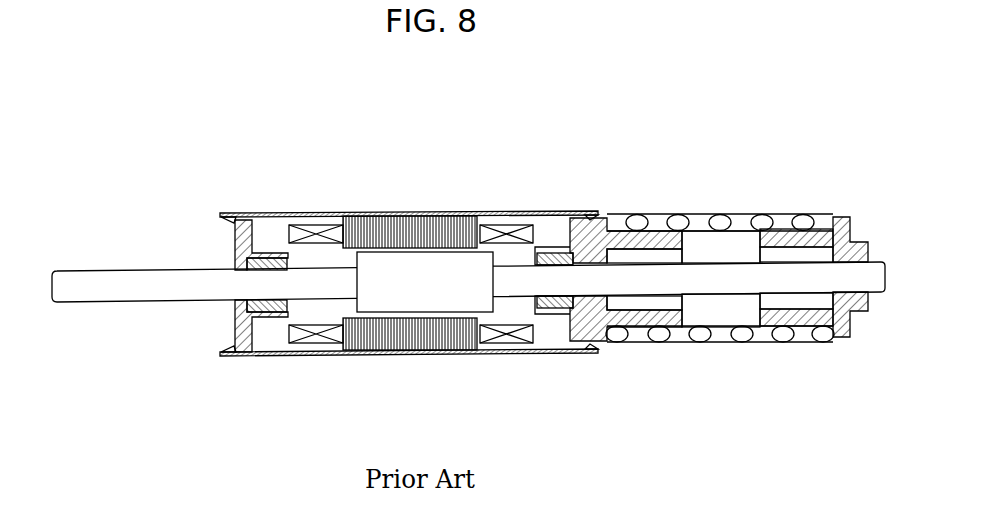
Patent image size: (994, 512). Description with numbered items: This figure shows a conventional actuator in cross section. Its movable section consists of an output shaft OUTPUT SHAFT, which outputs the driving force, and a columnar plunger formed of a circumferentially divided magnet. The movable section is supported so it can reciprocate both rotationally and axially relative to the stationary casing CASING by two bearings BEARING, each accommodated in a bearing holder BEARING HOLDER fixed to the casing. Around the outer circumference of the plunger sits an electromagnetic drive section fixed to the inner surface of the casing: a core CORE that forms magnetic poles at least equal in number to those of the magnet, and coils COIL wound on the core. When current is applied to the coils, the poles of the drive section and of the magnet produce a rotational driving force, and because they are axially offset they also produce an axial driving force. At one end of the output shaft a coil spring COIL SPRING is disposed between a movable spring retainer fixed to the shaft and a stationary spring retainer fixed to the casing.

The output shaft OUTPUT SHAFT is at (80, 282).
The bearing holder portion BEARING HOLDER is at (269, 252).
The stationary casing CASING is at (302, 213).
The core CORE is at (407, 223).
The coil COIL is at (503, 225).
The coil spring COIL SPRING is at (677, 220).
The bearing BEARING is at (267, 308).